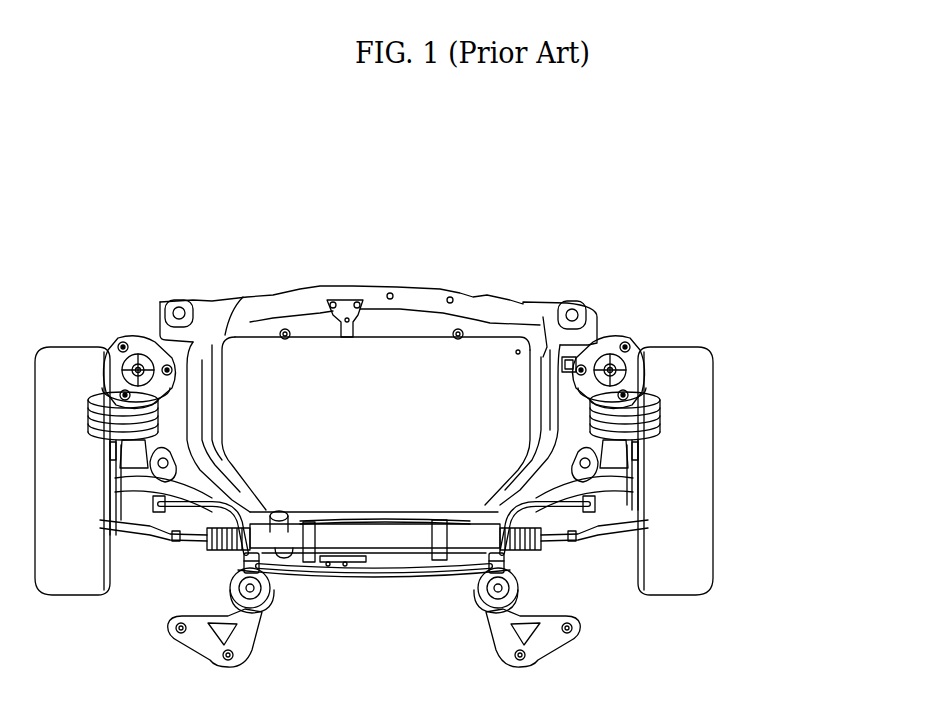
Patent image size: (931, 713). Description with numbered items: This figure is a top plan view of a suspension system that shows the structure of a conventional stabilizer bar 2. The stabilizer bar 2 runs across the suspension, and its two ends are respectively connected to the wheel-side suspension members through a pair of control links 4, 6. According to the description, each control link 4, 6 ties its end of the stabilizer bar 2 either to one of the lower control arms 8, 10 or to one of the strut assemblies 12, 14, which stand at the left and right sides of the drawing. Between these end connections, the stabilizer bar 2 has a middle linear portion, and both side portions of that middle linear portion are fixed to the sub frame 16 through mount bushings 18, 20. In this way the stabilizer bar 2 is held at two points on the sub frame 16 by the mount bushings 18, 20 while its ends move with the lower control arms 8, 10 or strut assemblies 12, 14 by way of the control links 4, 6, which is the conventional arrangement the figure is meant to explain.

The stabilizer bar 2 is at (344, 577).
The control link 4 is at (149, 463).
The control link 6 is at (617, 473).
The lower control arm 8 is at (180, 430).
The lower control arm 10 is at (560, 412).
The strut assembly 12 is at (122, 334).
The strut assembly 14 is at (613, 342).
The sub frame 16 is at (378, 560).
The mount bushing 18 is at (243, 565).
The mount bushing 20 is at (507, 569).